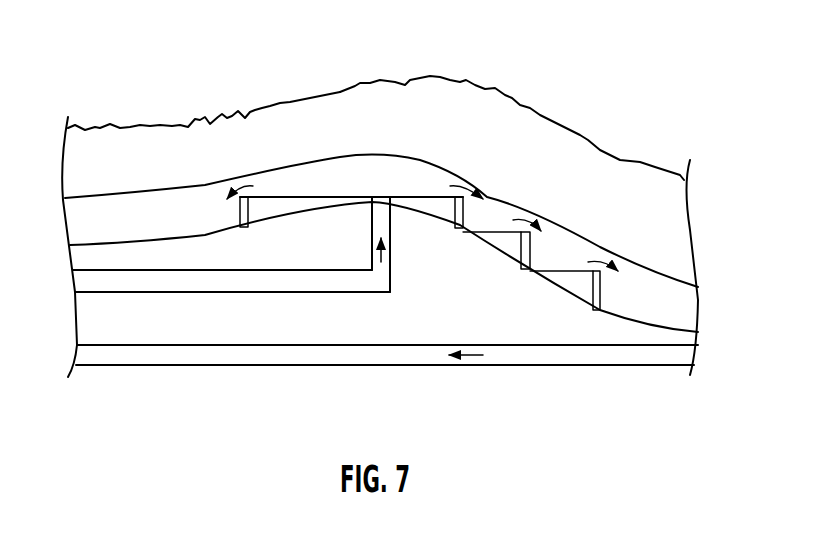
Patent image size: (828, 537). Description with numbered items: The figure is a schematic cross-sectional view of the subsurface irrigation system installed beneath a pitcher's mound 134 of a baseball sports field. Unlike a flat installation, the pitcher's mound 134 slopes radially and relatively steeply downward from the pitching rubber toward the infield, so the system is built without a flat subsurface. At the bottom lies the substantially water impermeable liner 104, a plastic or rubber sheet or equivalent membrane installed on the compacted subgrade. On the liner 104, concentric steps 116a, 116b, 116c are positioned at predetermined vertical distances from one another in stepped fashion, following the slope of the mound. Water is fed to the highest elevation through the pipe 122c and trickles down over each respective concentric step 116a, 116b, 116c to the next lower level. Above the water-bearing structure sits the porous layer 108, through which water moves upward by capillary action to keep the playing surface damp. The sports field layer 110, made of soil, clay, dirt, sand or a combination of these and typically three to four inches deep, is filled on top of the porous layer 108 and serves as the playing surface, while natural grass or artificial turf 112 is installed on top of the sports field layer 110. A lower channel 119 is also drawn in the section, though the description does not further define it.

The pitcher's mound 134 is at (287, 78).
The sports field layer 110 is at (402, 103).
The natural grass or artificial turf 112 is at (465, 80).
The porous layer 108 is at (425, 173).
The water impermeable liner 104 is at (189, 239).
The pipe 122c is at (391, 277).
The concentric step 116a is at (235, 213).
The concentric step 116b is at (530, 252).
The concentric step 116c is at (602, 293).
The cooling channel 119 is at (340, 352).